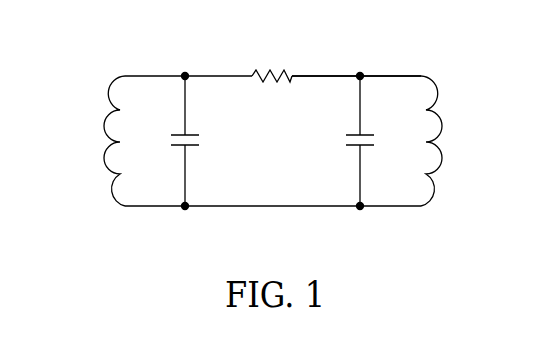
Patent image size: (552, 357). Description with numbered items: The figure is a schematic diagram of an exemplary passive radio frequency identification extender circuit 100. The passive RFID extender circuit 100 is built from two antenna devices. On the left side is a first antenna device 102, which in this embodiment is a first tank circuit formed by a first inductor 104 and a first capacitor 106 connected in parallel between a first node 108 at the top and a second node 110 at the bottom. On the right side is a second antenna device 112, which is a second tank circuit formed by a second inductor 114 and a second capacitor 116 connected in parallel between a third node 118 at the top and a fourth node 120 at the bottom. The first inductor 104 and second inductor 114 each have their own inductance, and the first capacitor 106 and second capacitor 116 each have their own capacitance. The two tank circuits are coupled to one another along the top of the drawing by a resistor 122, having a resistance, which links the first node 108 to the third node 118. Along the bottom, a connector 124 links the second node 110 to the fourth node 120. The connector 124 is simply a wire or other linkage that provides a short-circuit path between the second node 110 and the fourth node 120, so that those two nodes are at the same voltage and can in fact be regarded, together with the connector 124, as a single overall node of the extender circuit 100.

The passive RFID extender circuit 100 is at (459, 205).
The first antenna device 102 is at (140, 68).
The first inductor 104 is at (92, 204).
The first capacitor 106 is at (196, 128).
The first node 108 is at (185, 73).
The second node 110 is at (186, 209).
The second antenna device 112 is at (406, 68).
The second inductor 114 is at (459, 79).
The second capacitor 116 is at (352, 128).
The third node 118 is at (360, 73).
The fourth node 120 is at (360, 209).
The resistor 122 is at (279, 62).
The connector 124 is at (272, 206).